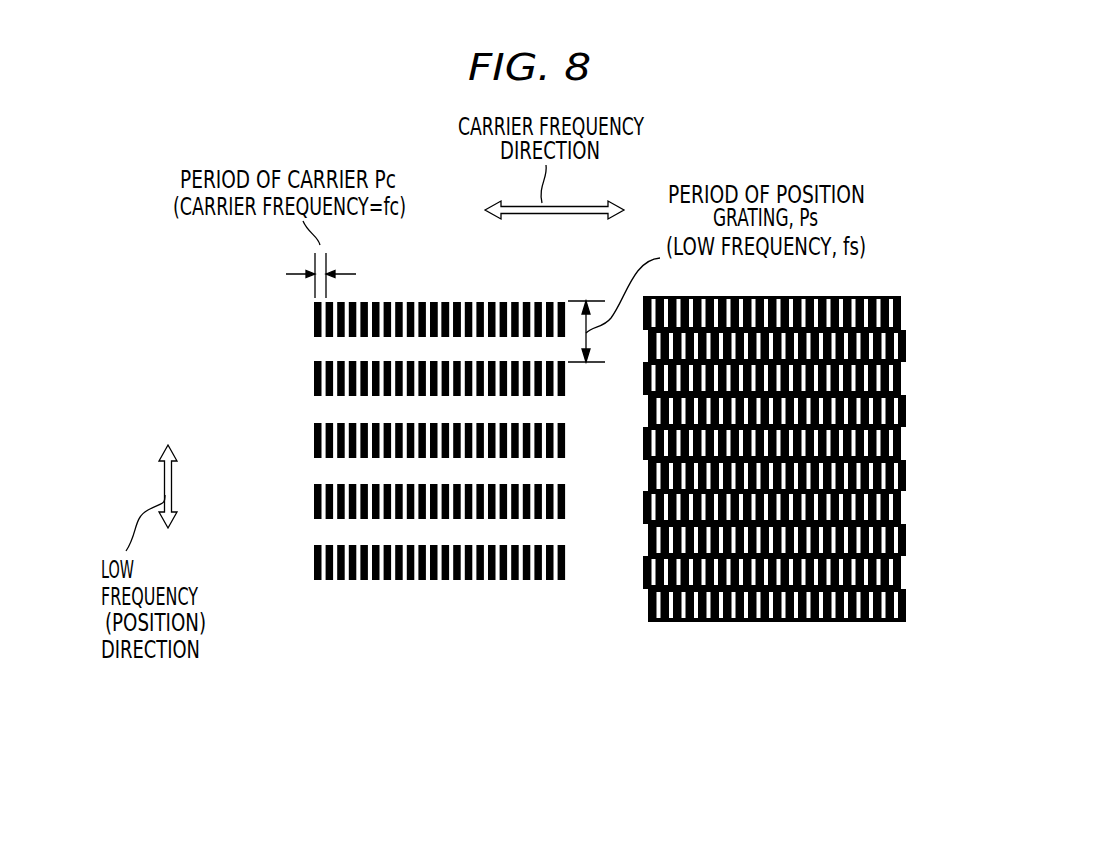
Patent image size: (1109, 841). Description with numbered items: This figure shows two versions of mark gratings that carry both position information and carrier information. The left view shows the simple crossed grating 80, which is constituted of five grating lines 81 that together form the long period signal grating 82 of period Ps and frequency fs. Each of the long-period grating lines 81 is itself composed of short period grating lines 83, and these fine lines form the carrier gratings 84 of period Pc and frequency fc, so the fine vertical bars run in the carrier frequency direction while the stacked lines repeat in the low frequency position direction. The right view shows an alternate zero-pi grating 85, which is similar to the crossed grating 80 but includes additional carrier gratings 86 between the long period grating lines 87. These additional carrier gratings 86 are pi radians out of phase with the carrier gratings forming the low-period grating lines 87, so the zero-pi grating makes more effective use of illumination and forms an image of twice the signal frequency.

The crossed grating 80 is at (403, 700).
The grating lines 81 is at (306, 312).
The signal grating 82 is at (246, 287).
The short period grating lines 83 is at (424, 294).
The carrier gratings 84 is at (575, 595).
The zero-pi grating 85 is at (790, 698).
The additional carrier gratings 86 is at (898, 340).
The long period grating lines 87 is at (893, 305).